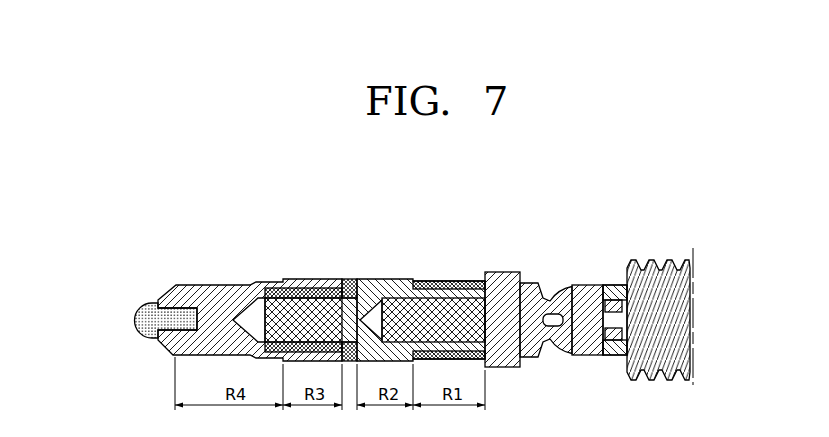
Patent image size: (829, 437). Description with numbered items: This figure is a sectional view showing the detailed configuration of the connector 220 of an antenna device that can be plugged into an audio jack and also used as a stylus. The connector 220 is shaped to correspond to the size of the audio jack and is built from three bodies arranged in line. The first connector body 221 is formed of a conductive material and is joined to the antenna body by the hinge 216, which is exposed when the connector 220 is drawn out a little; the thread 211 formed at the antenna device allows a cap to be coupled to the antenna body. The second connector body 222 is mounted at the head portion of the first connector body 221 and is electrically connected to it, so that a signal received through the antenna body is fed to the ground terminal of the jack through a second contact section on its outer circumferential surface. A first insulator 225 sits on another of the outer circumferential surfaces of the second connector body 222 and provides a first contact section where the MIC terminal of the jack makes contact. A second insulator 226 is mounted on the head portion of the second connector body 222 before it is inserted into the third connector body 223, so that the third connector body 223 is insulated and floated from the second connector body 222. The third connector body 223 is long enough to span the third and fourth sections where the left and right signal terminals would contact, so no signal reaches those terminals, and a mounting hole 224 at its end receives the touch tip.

The connector 220 is at (185, 226).
The third connector body 223 is at (213, 290).
The mounting hole 224 is at (183, 307).
The second insulator 226 is at (307, 292).
The second connector body 222 is at (383, 287).
The first connector body 221 is at (432, 305).
The first insulator 225 is at (470, 284).
The hinge 216 is at (588, 292).
The thread 211 is at (665, 265).